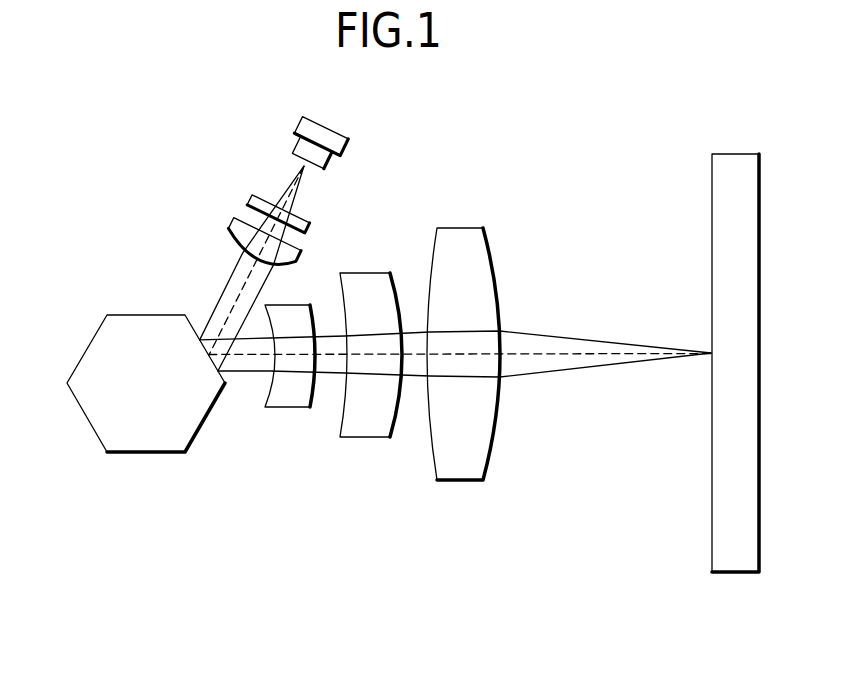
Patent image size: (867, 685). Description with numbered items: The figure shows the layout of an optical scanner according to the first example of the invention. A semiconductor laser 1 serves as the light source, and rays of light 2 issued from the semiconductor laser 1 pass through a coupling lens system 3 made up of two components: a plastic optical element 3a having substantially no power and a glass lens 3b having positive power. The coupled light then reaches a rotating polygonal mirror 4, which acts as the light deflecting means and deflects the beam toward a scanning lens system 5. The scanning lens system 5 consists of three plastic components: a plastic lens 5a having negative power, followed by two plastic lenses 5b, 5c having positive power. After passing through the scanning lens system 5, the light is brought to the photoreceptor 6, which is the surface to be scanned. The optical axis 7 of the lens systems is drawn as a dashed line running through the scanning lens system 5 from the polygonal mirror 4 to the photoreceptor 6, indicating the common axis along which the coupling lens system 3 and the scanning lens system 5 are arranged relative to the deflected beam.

The semiconductor laser 1 is at (330, 164).
The rays of light 2 is at (300, 176).
The coupling lens system 3 is at (203, 136).
The plastic optical element 3a is at (252, 200).
The glass lens 3b is at (232, 219).
The rotating polygonal mirror 4 is at (141, 313).
The scanning lens system 5 is at (452, 538).
The plastic lens having negative power 5a is at (292, 407).
The plastic lens having positive power 5b is at (363, 437).
The plastic lens having positive power 5c is at (452, 481).
The photoreceptor 6 is at (712, 197).
The optical axis 7 is at (577, 352).